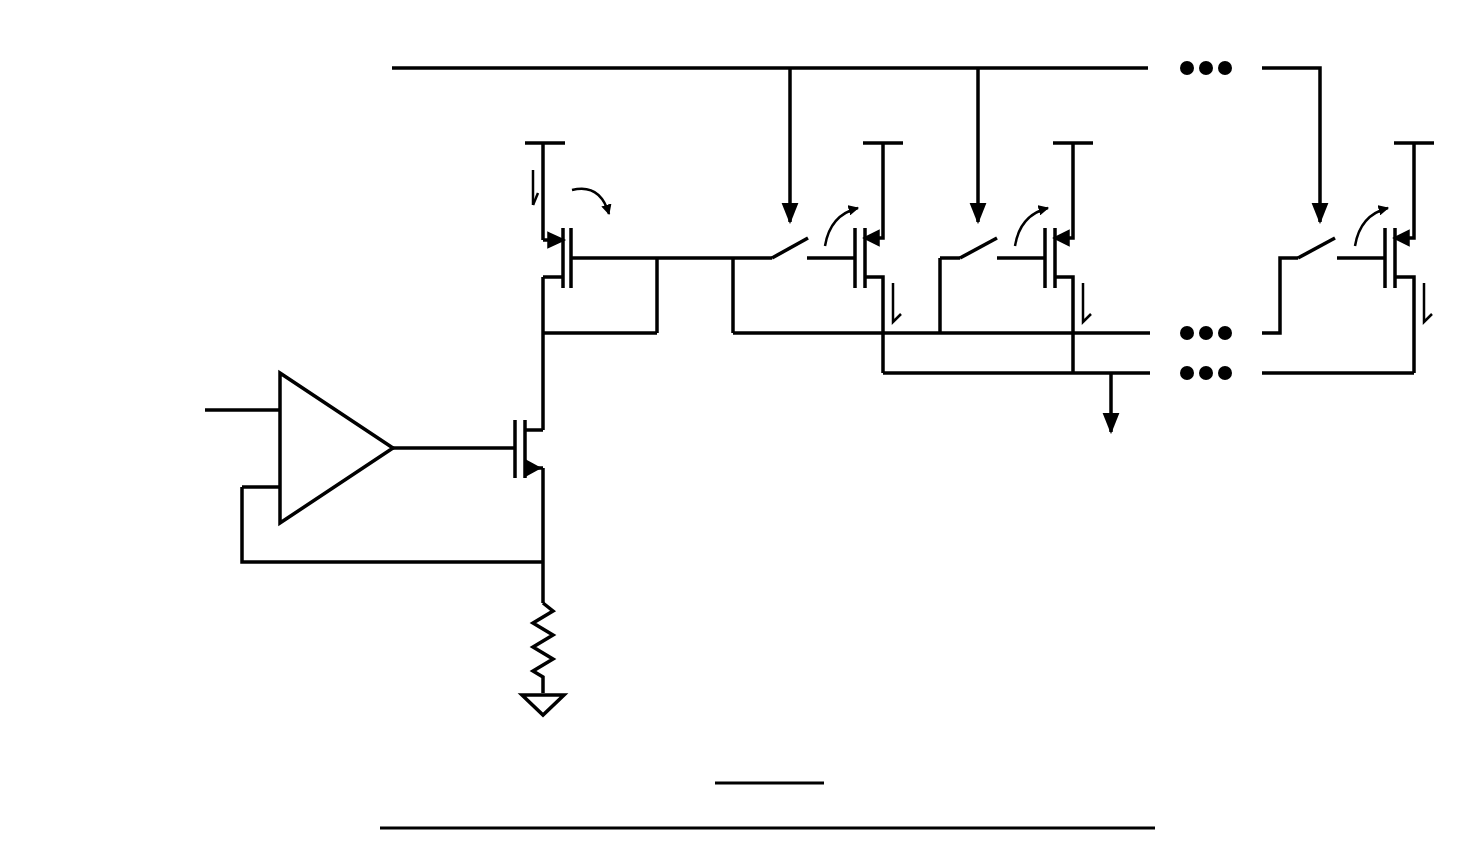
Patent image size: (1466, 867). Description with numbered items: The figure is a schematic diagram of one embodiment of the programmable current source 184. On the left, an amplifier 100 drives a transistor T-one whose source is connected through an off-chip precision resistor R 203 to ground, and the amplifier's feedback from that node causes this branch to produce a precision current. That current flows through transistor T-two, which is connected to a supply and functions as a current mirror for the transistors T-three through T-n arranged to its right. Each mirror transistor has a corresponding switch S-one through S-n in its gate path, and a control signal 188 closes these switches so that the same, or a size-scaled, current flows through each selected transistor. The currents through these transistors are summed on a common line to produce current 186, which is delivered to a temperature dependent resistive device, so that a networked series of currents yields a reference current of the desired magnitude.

The programmable current source 184 is at (801, 417).
The control signal 188 is at (734, 139).
The amplifier 100 is at (307, 433).
The current 186 is at (1108, 428).
The off-chip precision resistor 203 is at (631, 648).